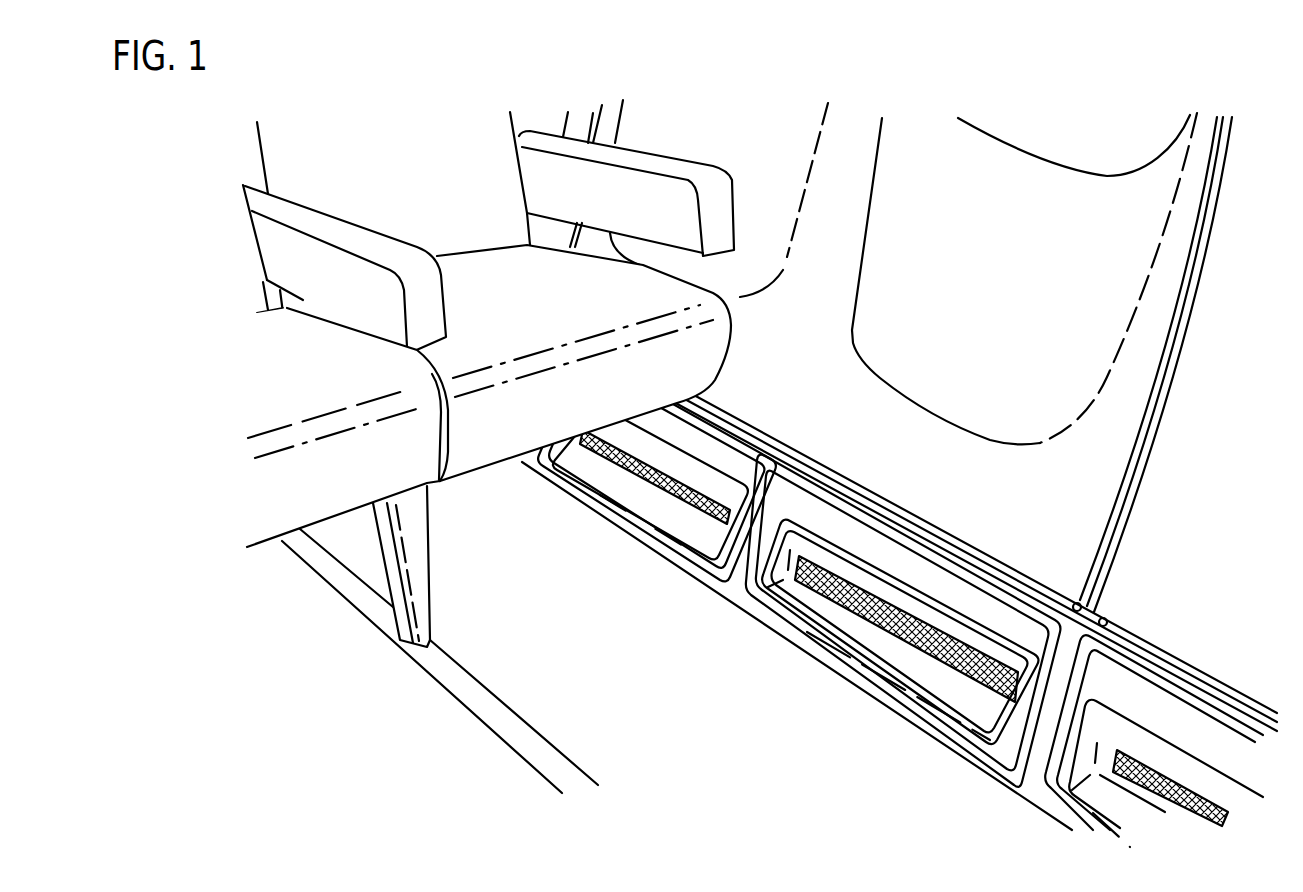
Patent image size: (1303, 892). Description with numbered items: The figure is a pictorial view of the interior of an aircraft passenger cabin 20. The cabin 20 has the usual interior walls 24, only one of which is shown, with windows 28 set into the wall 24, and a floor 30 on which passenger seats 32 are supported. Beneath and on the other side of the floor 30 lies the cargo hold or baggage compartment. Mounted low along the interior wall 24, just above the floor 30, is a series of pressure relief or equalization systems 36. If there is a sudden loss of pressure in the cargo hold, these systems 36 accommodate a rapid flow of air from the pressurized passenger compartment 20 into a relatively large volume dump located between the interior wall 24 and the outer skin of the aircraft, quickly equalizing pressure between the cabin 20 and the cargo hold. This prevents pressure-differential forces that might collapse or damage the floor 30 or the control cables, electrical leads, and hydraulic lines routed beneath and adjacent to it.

The passenger cabin 20 is at (723, 90).
The interior wall 24 is at (1072, 505).
The window 28 is at (790, 249).
The floor 30 is at (644, 682).
The passenger seat 32 is at (293, 157).
The pressure relief or equalization system 36 is at (683, 447).